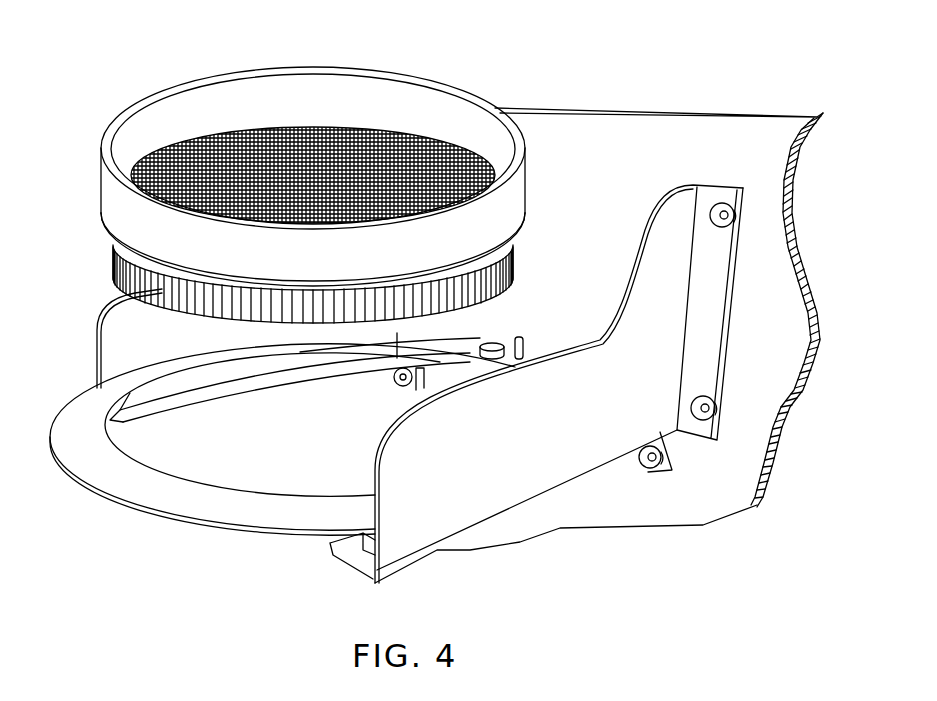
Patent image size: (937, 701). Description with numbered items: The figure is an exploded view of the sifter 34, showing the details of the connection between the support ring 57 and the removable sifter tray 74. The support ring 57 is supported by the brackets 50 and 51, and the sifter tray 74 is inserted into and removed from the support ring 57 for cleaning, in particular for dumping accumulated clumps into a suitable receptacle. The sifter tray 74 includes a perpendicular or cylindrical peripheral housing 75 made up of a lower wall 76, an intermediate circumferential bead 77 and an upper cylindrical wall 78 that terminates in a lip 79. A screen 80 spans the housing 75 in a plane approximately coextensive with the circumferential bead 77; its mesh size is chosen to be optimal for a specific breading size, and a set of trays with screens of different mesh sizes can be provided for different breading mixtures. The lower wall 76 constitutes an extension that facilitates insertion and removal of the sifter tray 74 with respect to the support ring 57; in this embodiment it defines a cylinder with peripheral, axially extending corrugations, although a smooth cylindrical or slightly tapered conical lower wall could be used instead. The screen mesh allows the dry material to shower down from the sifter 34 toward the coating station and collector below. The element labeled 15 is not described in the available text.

The side wall 15 is at (763, 148).
The sifter 34 is at (630, 78).
The bracket 50 is at (277, 426).
The bracket 51 is at (476, 474).
The support ring 57 is at (197, 498).
The removable sifter tray 74 is at (276, 162).
The peripheral housing 75 is at (90, 195).
The lower wall 76 is at (117, 283).
The intermediate circumferential bead 77 is at (119, 247).
The upper cylindrical wall 78 is at (116, 188).
The lip 79 is at (193, 84).
The screen 80 is at (300, 128).